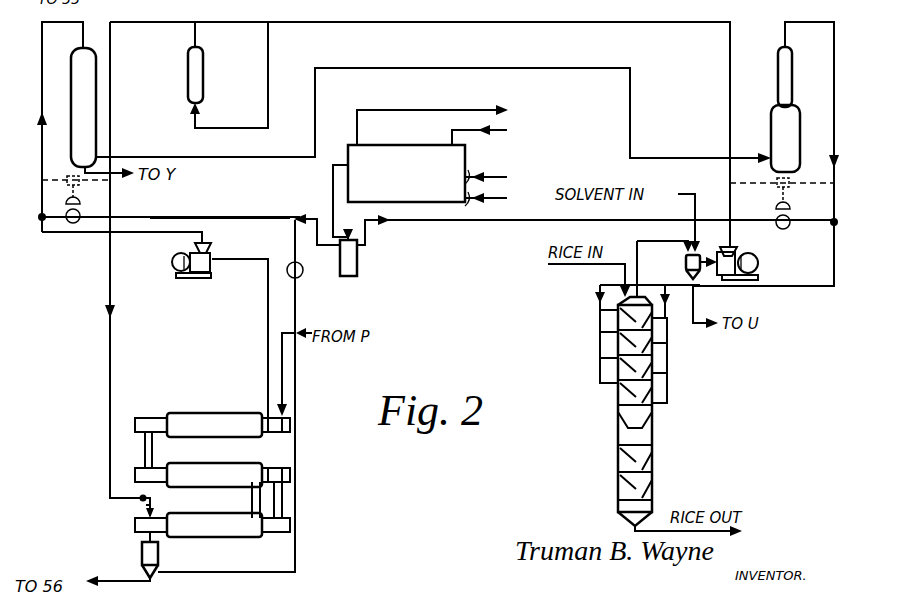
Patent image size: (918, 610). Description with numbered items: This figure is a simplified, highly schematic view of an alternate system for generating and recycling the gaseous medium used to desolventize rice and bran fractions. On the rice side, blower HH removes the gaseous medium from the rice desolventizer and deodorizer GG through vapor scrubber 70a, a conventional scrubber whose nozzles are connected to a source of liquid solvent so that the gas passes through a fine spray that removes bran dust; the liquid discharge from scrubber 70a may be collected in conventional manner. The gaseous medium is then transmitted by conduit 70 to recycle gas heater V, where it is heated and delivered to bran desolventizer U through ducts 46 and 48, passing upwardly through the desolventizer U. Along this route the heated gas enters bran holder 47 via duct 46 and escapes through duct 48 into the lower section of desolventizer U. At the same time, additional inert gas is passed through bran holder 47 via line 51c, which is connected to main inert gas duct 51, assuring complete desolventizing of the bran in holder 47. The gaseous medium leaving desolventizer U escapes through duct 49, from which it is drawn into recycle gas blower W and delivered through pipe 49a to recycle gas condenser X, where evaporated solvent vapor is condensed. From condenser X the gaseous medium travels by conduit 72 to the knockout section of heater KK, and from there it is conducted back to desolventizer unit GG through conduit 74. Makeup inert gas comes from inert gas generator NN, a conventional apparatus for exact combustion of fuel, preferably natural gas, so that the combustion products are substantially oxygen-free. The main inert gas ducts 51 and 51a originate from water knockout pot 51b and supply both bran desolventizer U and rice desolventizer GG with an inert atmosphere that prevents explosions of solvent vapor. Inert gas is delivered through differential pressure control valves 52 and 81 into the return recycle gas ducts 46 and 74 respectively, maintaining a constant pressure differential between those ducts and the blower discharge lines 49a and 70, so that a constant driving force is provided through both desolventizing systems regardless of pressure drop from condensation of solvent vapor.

The recycle gas condenser X is at (83, 85).
The recycle gas heater V is at (198, 70).
The heater KK is at (785, 75).
The conduit 70 is at (662, 24).
The conduit 72 is at (632, 105).
The conduit 74 is at (836, 122).
The inert gas generator NN is at (408, 175).
The main inert gas duct 51 is at (240, 221).
The main inert gas duct 51a is at (465, 223).
The water knockout pot 51b is at (358, 262).
The line 51c is at (297, 298).
The differential pressure control valve 52 is at (82, 230).
The pipe 49a is at (55, 236).
The recycle gas blower W is at (168, 282).
The duct 46 is at (108, 372).
The duct 49 is at (266, 372).
The bran desolventizer U is at (312, 412).
The duct 48 is at (152, 500).
The bran holder 47 is at (160, 550).
The differential pressure control valve 81 is at (778, 232).
The blower HH is at (762, 264).
The vapor scrubber 70a is at (698, 272).
The rice desolventizer and deodorizer GG is at (655, 422).